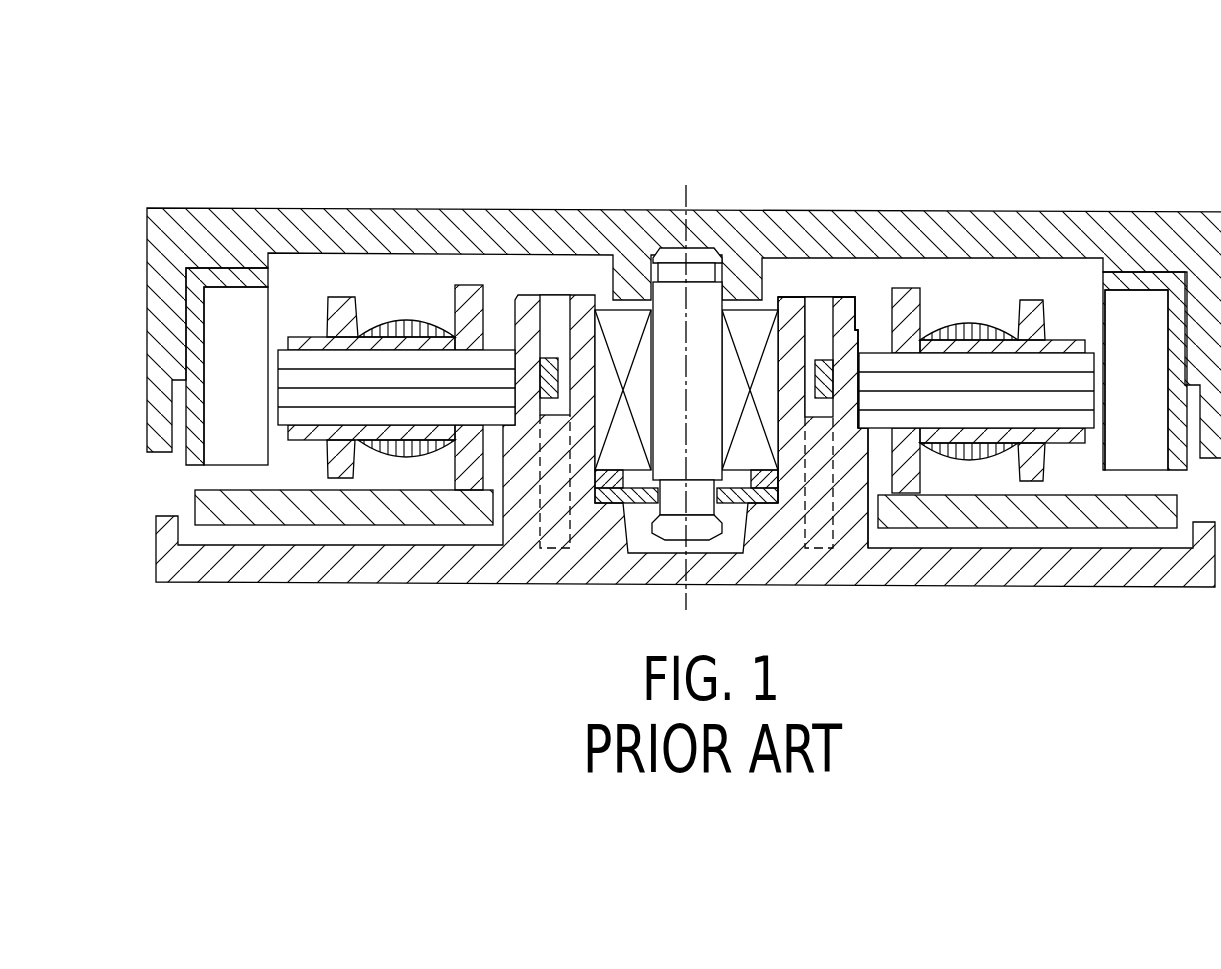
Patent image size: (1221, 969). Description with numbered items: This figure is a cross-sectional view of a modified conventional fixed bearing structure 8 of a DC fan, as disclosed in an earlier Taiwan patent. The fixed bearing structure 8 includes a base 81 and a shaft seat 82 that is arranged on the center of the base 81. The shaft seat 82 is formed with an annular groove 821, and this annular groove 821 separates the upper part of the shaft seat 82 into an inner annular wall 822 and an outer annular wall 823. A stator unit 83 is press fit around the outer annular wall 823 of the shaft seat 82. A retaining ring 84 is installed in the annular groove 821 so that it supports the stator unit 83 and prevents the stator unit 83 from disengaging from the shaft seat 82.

The fixed bearing structure 8 is at (1117, 180).
The base 81 is at (988, 573).
The shaft seat 82 is at (818, 345).
The annular groove 821 is at (820, 308).
The inner annular wall 822 is at (797, 300).
The outer annular wall 823 is at (842, 305).
The stator unit 83 is at (968, 281).
The retaining ring 84 is at (818, 397).